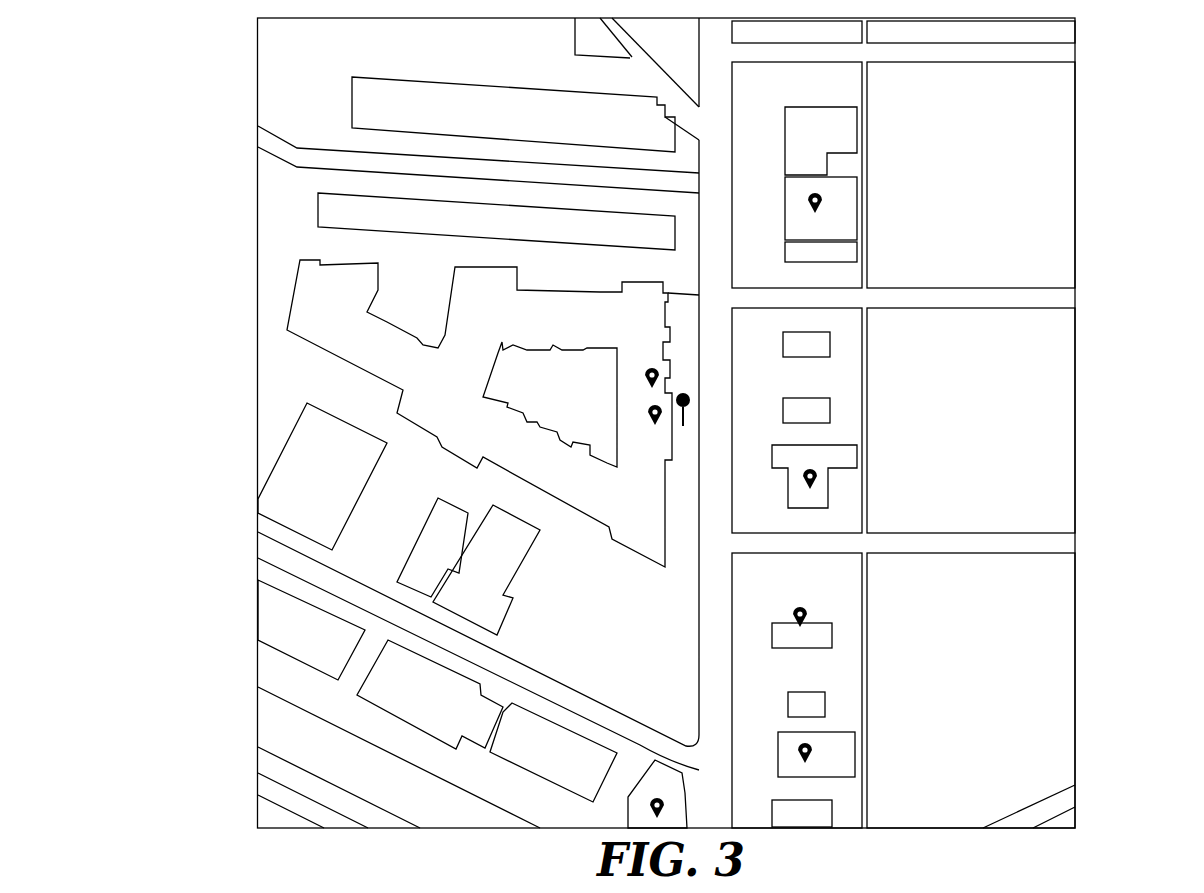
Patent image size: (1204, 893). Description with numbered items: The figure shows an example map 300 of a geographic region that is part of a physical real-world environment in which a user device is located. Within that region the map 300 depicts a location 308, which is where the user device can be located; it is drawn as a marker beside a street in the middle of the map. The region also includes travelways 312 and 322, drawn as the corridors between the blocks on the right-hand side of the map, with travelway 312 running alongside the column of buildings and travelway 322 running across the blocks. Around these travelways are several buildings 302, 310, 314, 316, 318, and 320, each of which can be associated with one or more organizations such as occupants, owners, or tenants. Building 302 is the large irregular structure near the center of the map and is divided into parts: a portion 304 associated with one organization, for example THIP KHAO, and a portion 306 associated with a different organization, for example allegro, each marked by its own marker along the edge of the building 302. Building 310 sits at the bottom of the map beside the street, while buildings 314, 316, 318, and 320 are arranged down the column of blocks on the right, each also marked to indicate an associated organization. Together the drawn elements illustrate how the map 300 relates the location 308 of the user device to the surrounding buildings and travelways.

The map 300 is at (205, 71).
The building 302 is at (602, 293).
The portion 304 is at (653, 368).
The portion 306 is at (655, 423).
The location 308 is at (690, 399).
The building 310 is at (627, 817).
The travelway 312 is at (720, 139).
The building 314 is at (857, 222).
The building 316 is at (857, 462).
The building 318 is at (833, 637).
The building 320 is at (855, 770).
The travelway 322 is at (1065, 300).